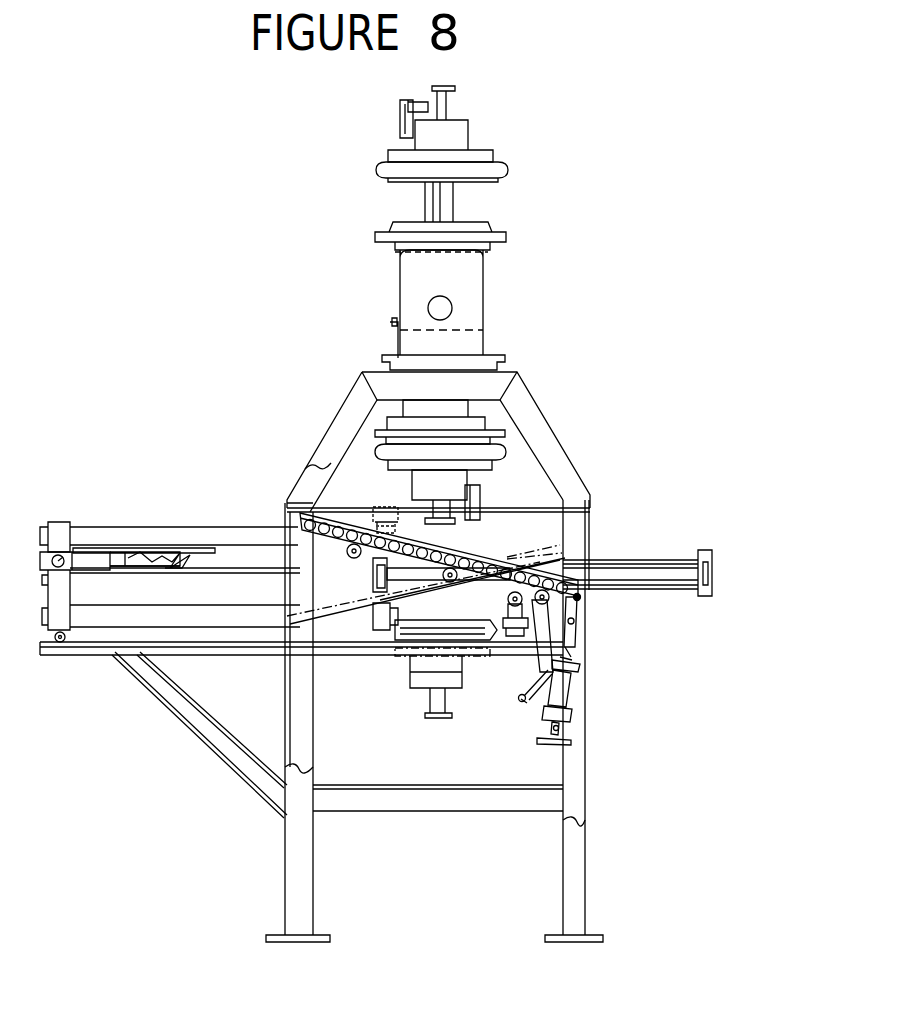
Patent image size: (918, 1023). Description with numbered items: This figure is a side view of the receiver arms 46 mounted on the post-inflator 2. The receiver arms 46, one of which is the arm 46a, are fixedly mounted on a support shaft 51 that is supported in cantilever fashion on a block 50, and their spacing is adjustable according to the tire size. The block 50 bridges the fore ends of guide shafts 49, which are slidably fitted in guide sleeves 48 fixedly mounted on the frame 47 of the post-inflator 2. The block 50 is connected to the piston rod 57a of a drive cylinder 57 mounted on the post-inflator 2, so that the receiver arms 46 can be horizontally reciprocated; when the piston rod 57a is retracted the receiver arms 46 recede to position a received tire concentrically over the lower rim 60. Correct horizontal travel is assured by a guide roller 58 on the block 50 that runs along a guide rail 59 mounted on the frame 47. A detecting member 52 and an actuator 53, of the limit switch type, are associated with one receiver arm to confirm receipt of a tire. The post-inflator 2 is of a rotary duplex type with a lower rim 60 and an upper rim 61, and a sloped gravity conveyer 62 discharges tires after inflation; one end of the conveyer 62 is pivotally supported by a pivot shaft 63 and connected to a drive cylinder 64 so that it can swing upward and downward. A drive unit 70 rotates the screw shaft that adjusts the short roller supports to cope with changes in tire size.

The post-inflator 2 is at (523, 316).
The receiver arms 46 is at (97, 542).
The arm 46a is at (138, 548).
The frame 47 is at (338, 417).
The guide sleeves 48 is at (378, 507).
The guide shafts 49 is at (220, 527).
The block 50 is at (70, 601).
The support shaft 51 is at (58, 522).
The detecting member 52 is at (118, 566).
The actuator 53 is at (172, 550).
The drive cylinder 57 is at (412, 640).
The piston rod 57a is at (258, 568).
The guide roller 58 is at (60, 645).
The guide rail 59 is at (258, 655).
The lower rim 60 is at (500, 175).
The upper rim 61 is at (490, 240).
The gravity conveyer 62 is at (518, 552).
The pivot shaft 63 is at (515, 636).
The drive cylinder 64 is at (565, 698).
The drive unit 70 is at (529, 714).